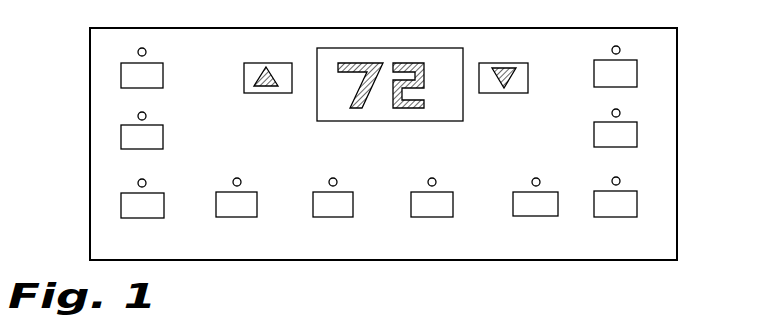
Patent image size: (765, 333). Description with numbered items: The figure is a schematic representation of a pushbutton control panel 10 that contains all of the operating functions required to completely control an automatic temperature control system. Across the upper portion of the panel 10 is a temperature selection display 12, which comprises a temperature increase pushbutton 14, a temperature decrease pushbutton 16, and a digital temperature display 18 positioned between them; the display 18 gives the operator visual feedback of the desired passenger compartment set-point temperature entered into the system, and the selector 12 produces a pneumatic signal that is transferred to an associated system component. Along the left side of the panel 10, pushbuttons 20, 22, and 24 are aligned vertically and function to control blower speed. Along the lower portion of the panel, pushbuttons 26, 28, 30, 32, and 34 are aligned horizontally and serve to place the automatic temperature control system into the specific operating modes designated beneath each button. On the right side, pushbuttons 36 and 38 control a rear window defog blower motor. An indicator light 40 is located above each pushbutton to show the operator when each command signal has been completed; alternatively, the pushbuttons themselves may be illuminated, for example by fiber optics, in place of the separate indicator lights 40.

The pushbutton control panel 10 is at (624, 267).
The temperature selection display 12 is at (428, 28).
The temperature increase pushbutton 14 is at (255, 63).
The temperature decrease pushbutton 16 is at (515, 63).
The digital temperature display 18 is at (347, 48).
The pushbutton 20 is at (121, 202).
The pushbutton 22 is at (121, 134).
The pushbutton 24 is at (121, 71).
The pushbutton 26 is at (257, 210).
The pushbutton 28 is at (353, 210).
The pushbutton 30 is at (453, 210).
The pushbutton 32 is at (558, 210).
The pushbutton 34 is at (637, 204).
The pushbutton 36 is at (637, 137).
The pushbutton 38 is at (637, 75).
The indicator light 40 is at (142, 47).